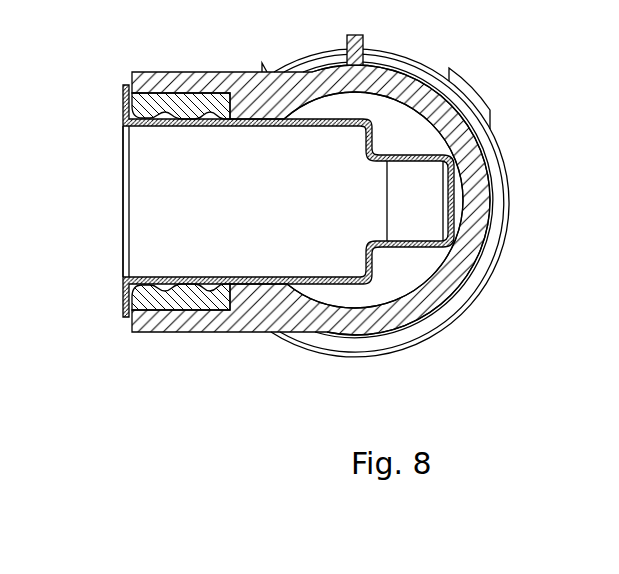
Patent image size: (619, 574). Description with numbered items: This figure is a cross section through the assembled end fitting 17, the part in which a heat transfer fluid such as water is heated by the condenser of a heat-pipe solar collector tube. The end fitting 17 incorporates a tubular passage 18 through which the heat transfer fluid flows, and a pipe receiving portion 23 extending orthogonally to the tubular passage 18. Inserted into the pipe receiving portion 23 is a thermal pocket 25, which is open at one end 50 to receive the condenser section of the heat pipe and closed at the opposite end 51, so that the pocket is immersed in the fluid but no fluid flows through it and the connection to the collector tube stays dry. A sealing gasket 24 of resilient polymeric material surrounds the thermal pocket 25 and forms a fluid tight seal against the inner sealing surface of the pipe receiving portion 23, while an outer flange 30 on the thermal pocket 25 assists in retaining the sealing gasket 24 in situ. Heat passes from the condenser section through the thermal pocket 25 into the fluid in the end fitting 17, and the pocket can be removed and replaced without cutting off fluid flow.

The end fitting 17 is at (488, 203).
The tubular passage 18 is at (413, 123).
The pipe receiving portion 23 is at (200, 318).
The sealing gasket 24 is at (160, 308).
The thermal pocket 25 is at (283, 325).
The outer flange 30 is at (123, 298).
The open end 50 is at (124, 200).
The closed end 51 is at (455, 187).